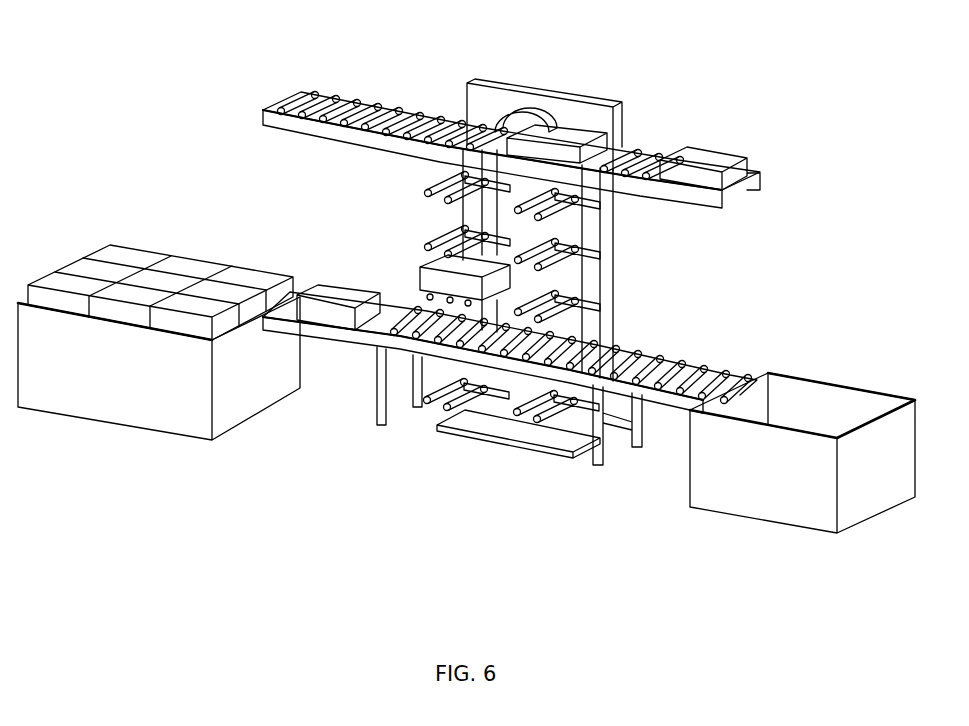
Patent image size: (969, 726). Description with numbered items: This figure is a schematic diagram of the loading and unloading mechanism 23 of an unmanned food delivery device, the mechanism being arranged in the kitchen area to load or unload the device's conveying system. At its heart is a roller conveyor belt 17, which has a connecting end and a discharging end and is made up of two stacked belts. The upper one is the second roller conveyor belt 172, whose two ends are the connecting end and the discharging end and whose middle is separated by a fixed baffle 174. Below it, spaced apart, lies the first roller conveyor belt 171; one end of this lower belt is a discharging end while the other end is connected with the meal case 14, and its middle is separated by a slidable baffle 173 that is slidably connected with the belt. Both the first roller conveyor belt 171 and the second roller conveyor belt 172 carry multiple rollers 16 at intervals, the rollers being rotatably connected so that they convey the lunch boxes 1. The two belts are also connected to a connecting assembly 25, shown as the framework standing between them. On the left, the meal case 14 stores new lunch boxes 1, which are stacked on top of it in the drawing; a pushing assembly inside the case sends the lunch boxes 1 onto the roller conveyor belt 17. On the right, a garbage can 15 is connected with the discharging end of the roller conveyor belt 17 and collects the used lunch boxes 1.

The lunch box 1 is at (127, 260).
The meal case 14 is at (135, 380).
The garbage can 15 is at (747, 478).
The rollers 16 is at (317, 112).
The roller conveyor belt 17 is at (735, 368).
The loading and unloading mechanism 23 is at (252, 185).
The connecting assembly 25 is at (607, 302).
The first roller conveyor belt 171 is at (307, 333).
The second roller conveyor belt 172 is at (313, 128).
The slidable baffle 173 is at (498, 340).
The fixed baffle 174 is at (615, 113).